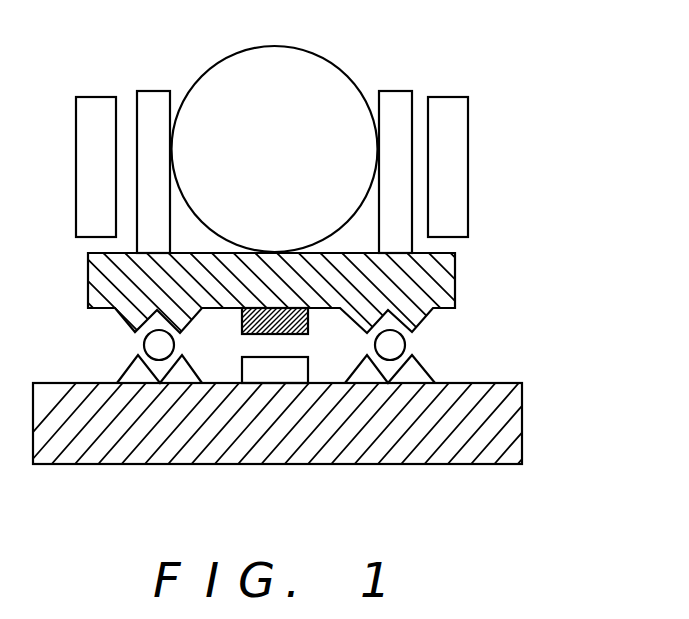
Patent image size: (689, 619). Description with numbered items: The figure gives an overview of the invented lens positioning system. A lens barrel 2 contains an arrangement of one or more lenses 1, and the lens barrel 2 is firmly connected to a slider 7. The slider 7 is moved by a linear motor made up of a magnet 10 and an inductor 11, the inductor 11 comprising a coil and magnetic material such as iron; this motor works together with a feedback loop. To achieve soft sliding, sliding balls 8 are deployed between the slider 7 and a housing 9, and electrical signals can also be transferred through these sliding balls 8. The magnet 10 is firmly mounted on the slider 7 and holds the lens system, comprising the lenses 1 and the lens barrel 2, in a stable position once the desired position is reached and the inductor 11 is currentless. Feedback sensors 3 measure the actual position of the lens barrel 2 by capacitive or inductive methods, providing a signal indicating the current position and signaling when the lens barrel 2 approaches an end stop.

The lens 1 is at (238, 66).
The lens barrel 2 is at (160, 105).
The feedback sensor 3 is at (100, 106).
The slider 7 is at (445, 283).
The sliding ball 8 is at (160, 347).
The housing 9 is at (510, 431).
The magnet 10 is at (308, 318).
The inductor 11 is at (242, 365).